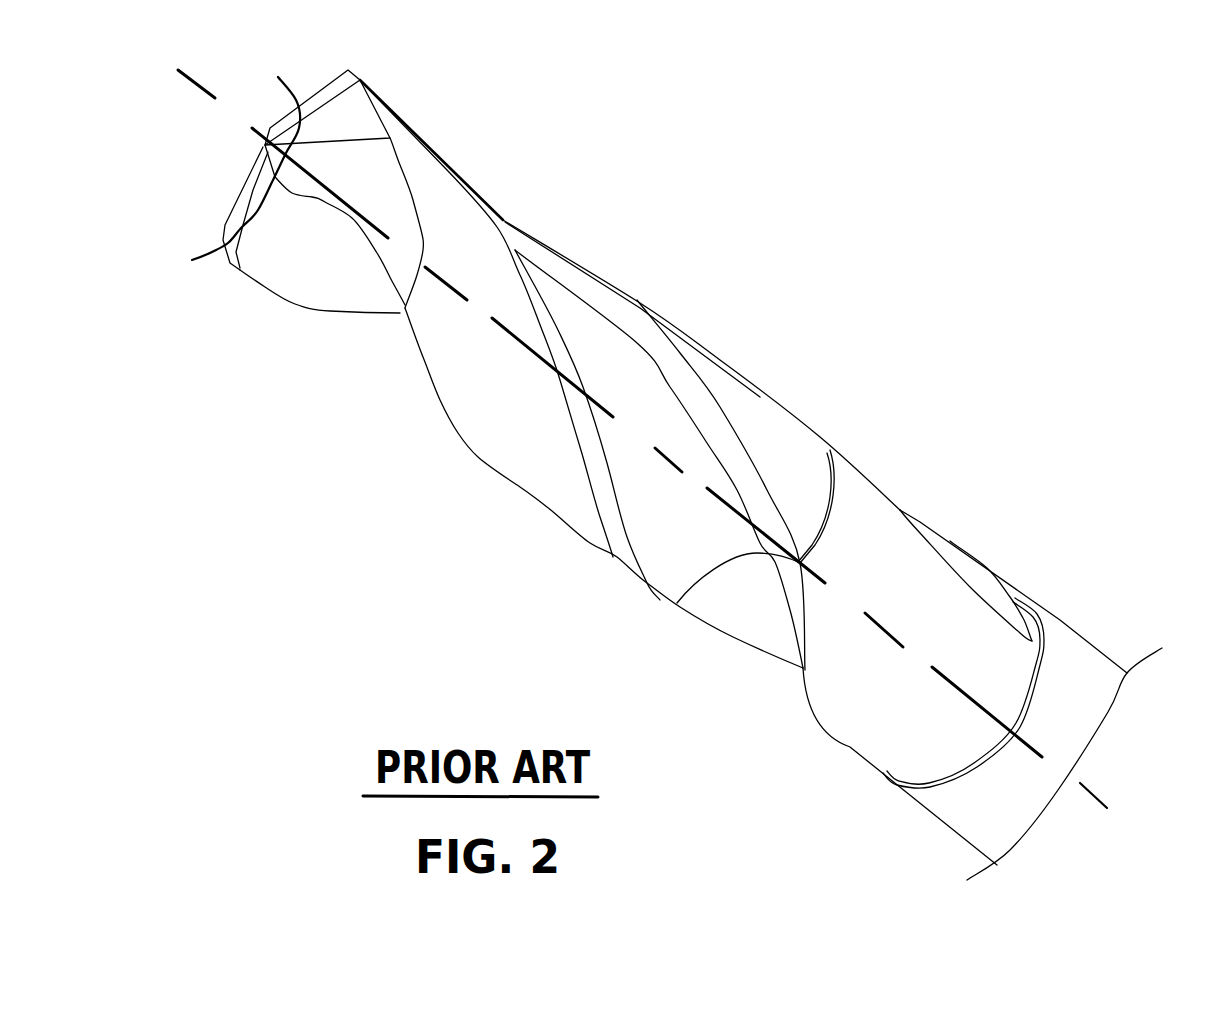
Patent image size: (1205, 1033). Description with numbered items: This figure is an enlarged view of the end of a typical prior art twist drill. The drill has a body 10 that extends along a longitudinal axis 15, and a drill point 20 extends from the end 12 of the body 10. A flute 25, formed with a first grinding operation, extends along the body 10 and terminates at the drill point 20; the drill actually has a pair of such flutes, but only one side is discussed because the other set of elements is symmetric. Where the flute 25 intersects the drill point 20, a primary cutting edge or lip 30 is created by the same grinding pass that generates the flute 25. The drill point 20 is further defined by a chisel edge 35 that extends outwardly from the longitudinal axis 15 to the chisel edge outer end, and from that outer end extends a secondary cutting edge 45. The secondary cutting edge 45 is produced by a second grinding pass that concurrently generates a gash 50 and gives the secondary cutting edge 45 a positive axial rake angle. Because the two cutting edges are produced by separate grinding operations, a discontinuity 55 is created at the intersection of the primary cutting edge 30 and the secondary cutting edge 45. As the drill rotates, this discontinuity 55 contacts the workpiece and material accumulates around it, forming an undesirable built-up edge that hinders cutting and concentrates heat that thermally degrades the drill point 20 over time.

The body 10 is at (850, 747).
The end 12 is at (427, 460).
The longitudinal axis 15 is at (1093, 790).
The drill point 20 is at (328, 352).
The flute 25 is at (404, 312).
The primary cutting edge 30 is at (257, 225).
The chisel edge 35 is at (265, 153).
The secondary cutting edge 45 is at (246, 149).
The gash 50 is at (383, 190).
The discontinuity 55 is at (202, 214).